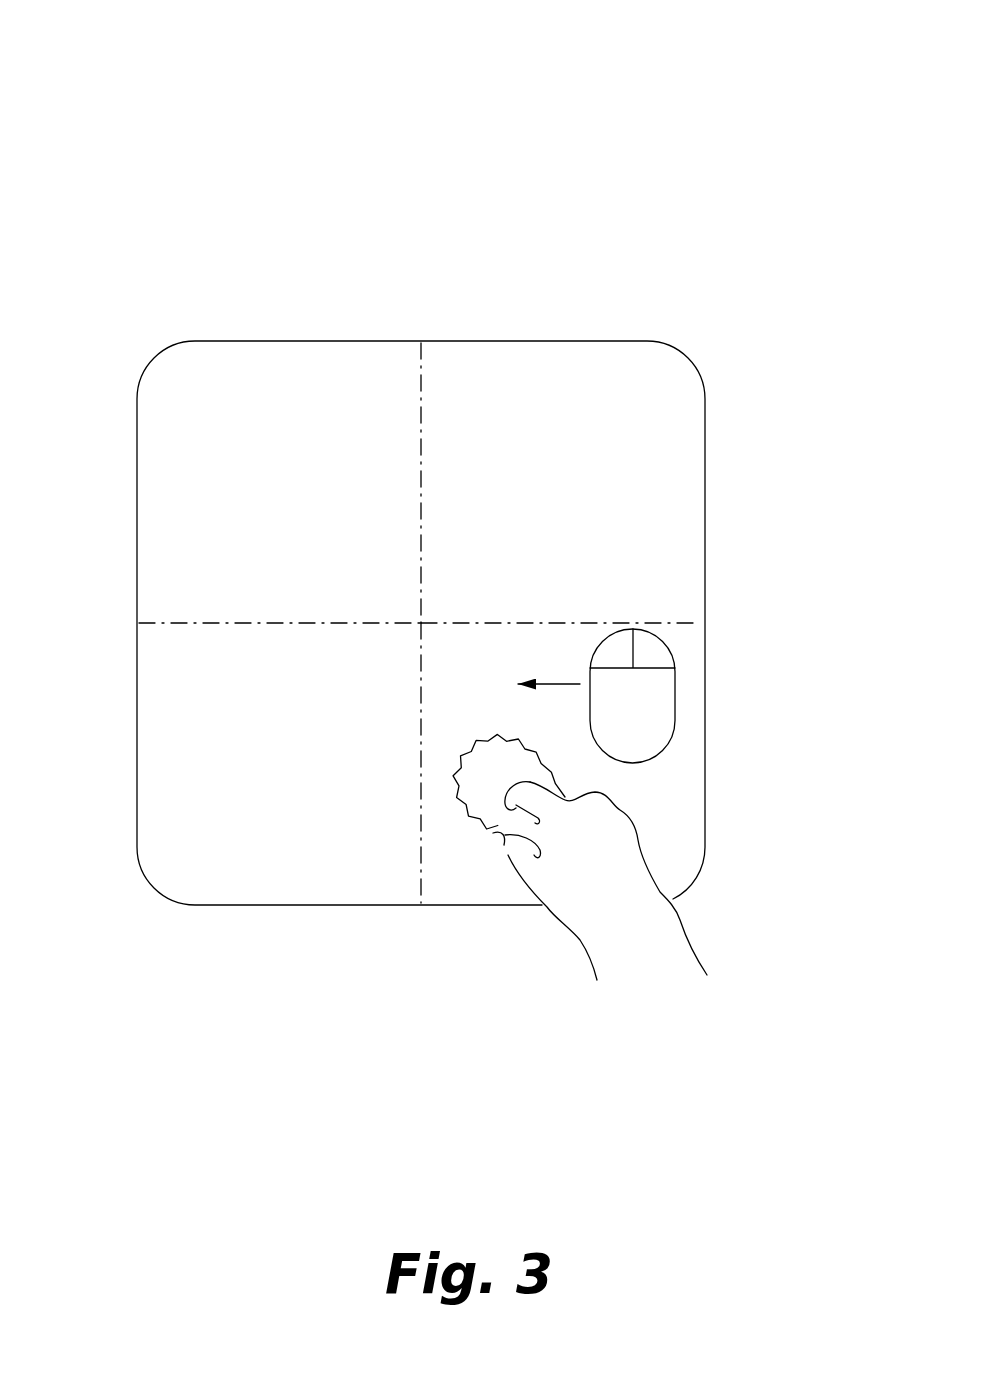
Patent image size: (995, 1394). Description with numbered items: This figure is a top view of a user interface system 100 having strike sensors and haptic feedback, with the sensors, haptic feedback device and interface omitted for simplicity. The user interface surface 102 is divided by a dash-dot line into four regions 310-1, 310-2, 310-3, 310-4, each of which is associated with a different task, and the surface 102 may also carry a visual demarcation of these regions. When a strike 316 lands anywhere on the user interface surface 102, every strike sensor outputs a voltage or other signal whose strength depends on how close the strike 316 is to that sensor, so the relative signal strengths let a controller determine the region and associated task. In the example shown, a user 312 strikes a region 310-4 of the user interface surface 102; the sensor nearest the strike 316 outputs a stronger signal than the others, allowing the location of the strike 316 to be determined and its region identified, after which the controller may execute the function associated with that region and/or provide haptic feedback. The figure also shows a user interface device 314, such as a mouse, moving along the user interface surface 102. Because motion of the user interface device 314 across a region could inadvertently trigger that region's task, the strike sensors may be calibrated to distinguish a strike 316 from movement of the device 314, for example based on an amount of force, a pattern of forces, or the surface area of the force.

The user interface system 100 is at (227, 87).
The user interface surface 102 is at (539, 340).
The region 310-1 is at (222, 482).
The region 310-2 is at (222, 728).
The region 310-3 is at (667, 543).
The region 310-4 is at (667, 797).
The user 312 is at (670, 953).
The user interface device 314 is at (663, 720).
The strike 316 is at (500, 812).